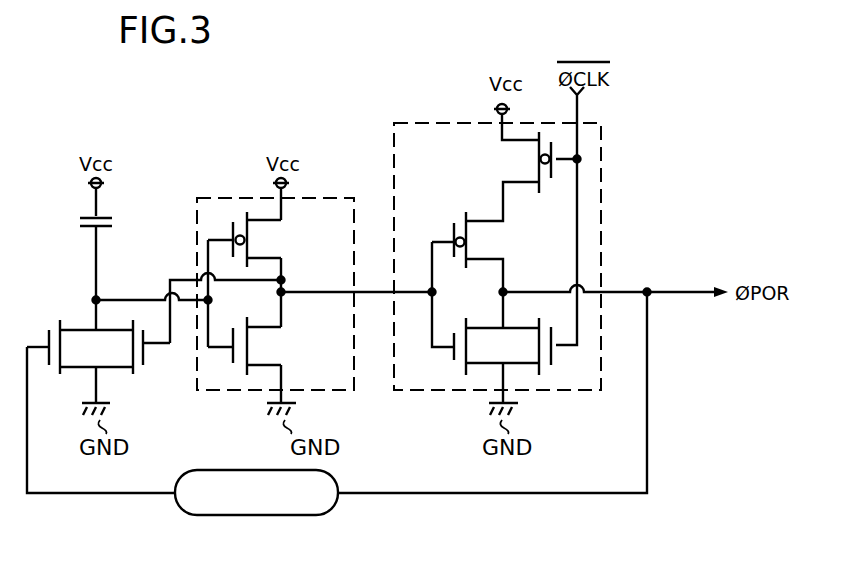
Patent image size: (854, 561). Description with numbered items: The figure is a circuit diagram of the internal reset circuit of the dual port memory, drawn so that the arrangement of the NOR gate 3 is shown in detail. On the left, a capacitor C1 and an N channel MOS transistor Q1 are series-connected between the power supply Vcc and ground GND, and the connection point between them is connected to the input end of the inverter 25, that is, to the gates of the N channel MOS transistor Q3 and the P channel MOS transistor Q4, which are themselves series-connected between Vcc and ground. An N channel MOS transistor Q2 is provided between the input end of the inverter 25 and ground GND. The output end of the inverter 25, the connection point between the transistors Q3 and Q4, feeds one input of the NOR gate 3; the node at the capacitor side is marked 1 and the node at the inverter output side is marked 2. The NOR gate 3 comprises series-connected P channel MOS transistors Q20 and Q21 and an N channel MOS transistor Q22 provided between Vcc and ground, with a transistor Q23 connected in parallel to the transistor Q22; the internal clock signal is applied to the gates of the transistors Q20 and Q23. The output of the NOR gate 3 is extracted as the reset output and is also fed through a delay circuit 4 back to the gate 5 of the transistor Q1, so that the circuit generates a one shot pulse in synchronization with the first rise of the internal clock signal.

The node 1 (capacitor/transistor junction) 1 is at (93, 300).
The node 2 (inverter output to latch) 2 is at (426, 298).
The NOR gate 3 is at (422, 122).
The delay circuit 4 is at (322, 514).
The gate of transistor Q1 5 is at (47, 338).
The inverter 25 is at (230, 197).
The capacitor C1 is at (118, 224).
The N channel MOS transistor Q1 is at (58, 372).
The N channel MOS transistor Q2 is at (138, 372).
The N channel MOS transistor Q3 is at (254, 350).
The P channel MOS transistor Q4 is at (254, 240).
The P channel MOS transistor Q20 is at (524, 163).
The P channel MOS transistor Q21 is at (480, 244).
The N channel MOS transistor Q22 is at (470, 349).
The transistor Q23 is at (572, 352).